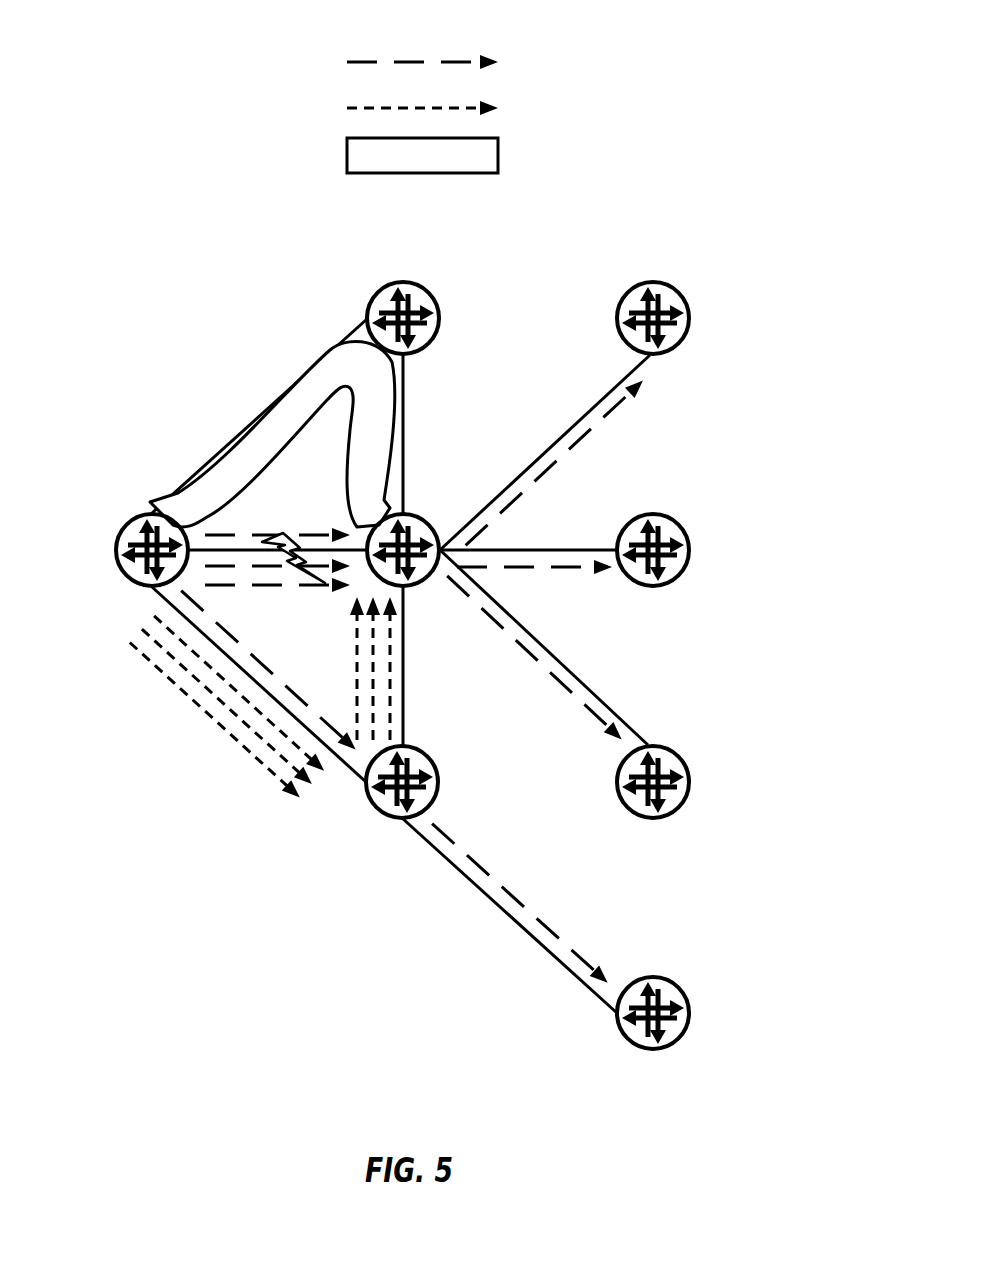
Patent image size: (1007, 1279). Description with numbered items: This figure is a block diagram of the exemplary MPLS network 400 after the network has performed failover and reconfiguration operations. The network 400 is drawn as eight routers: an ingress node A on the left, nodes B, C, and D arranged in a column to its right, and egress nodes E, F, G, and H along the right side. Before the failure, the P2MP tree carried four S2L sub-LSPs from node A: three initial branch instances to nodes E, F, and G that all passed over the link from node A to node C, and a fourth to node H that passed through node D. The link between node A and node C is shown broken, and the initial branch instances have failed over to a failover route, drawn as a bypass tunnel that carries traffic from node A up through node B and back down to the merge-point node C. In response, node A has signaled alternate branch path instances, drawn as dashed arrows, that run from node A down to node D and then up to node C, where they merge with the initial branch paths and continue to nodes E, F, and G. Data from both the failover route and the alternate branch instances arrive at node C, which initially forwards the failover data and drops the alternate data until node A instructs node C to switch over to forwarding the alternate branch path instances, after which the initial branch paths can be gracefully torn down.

The network 400 is at (132, 82).
The node A is at (149, 537).
The node B is at (403, 303).
The node C is at (407, 538).
The node D is at (406, 769).
The node E is at (653, 303).
The node F is at (657, 538).
The node G is at (657, 769).
The node H is at (660, 1002).